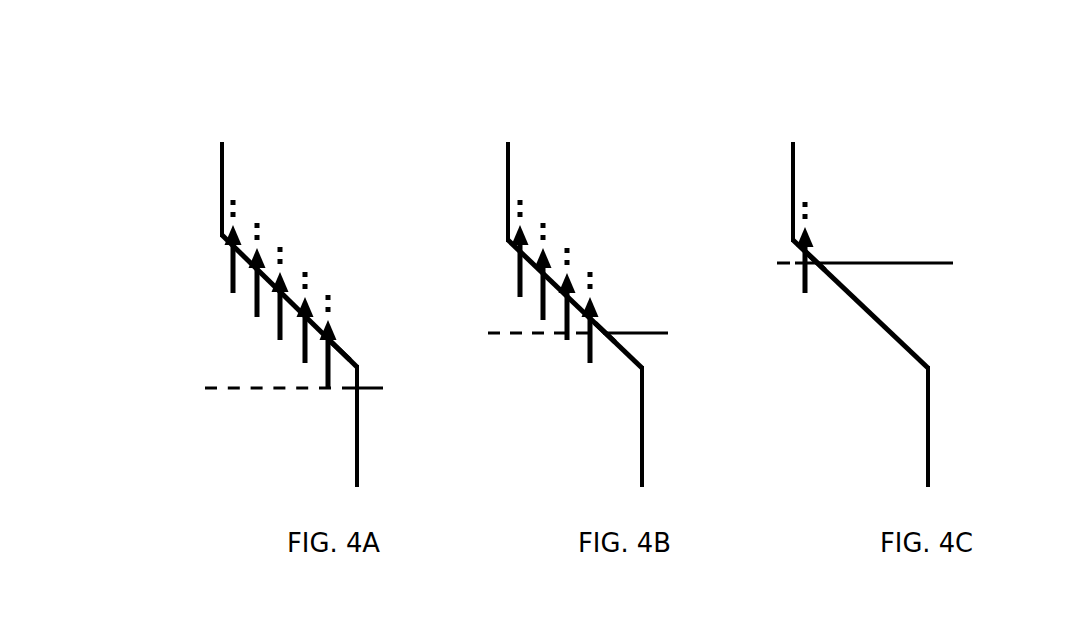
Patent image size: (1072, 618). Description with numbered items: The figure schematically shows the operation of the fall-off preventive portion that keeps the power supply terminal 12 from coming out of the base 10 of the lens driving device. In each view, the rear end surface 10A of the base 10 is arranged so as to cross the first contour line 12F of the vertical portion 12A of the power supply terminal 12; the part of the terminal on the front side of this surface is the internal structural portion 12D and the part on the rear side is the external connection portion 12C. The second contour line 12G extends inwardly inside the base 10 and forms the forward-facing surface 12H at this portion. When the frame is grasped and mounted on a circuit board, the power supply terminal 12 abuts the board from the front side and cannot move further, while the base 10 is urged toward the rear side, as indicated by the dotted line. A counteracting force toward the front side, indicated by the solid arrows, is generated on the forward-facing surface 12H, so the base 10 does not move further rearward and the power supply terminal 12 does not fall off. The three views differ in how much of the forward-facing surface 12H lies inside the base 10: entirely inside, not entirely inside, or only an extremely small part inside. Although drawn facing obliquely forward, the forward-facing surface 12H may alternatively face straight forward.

In FIG. 4A, the base 10 is at (253, 270).
In FIG. 4B, the base 10 is at (543, 271).
In FIG. 4C, the base 10 is at (821, 273).
In FIG. 4A, the rear end surface 10A is at (395, 431).
In FIG. 4B, the rear end surface 10A is at (656, 306).
In FIG. 4C, the rear end surface 10A is at (903, 237).
In FIG. 4A, the power supply terminal 12 is at (195, 342).
In FIG. 4B, the power supply terminal 12 is at (476, 326).
In FIG. 4C, the power supply terminal 12 is at (764, 297).
In FIG. 4A, the vertical portion 12A is at (195, 342).
In FIG. 4B, the vertical portion 12A is at (476, 326).
In FIG. 4C, the vertical portion 12A is at (764, 297).
In FIG. 4A, the external connection portion 12C is at (195, 342).
In FIG. 4B, the external connection portion 12C is at (537, 328).
In FIG. 4C, the external connection portion 12C is at (825, 327).
In FIG. 4A, the internal structural portion 12D is at (194, 348).
In FIG. 4B, the internal structural portion 12D is at (469, 265).
In FIG. 4C, the internal structural portion 12D is at (709, 202).
In FIG. 4A, the first contour line 12F is at (405, 435).
In FIG. 4B, the first contour line 12F is at (687, 428).
In FIG. 4C, the first contour line 12F is at (971, 426).
In FIG. 4A, the second contour line 12G is at (316, 301).
In FIG. 4B, the second contour line 12G is at (626, 304).
In FIG. 4C, the second contour line 12G is at (900, 304).
In FIG. 4A, the forward-facing surface 12H is at (356, 301).
In FIG. 4B, the forward-facing surface 12H is at (619, 282).
In FIG. 4C, the forward-facing surface 12H is at (846, 239).